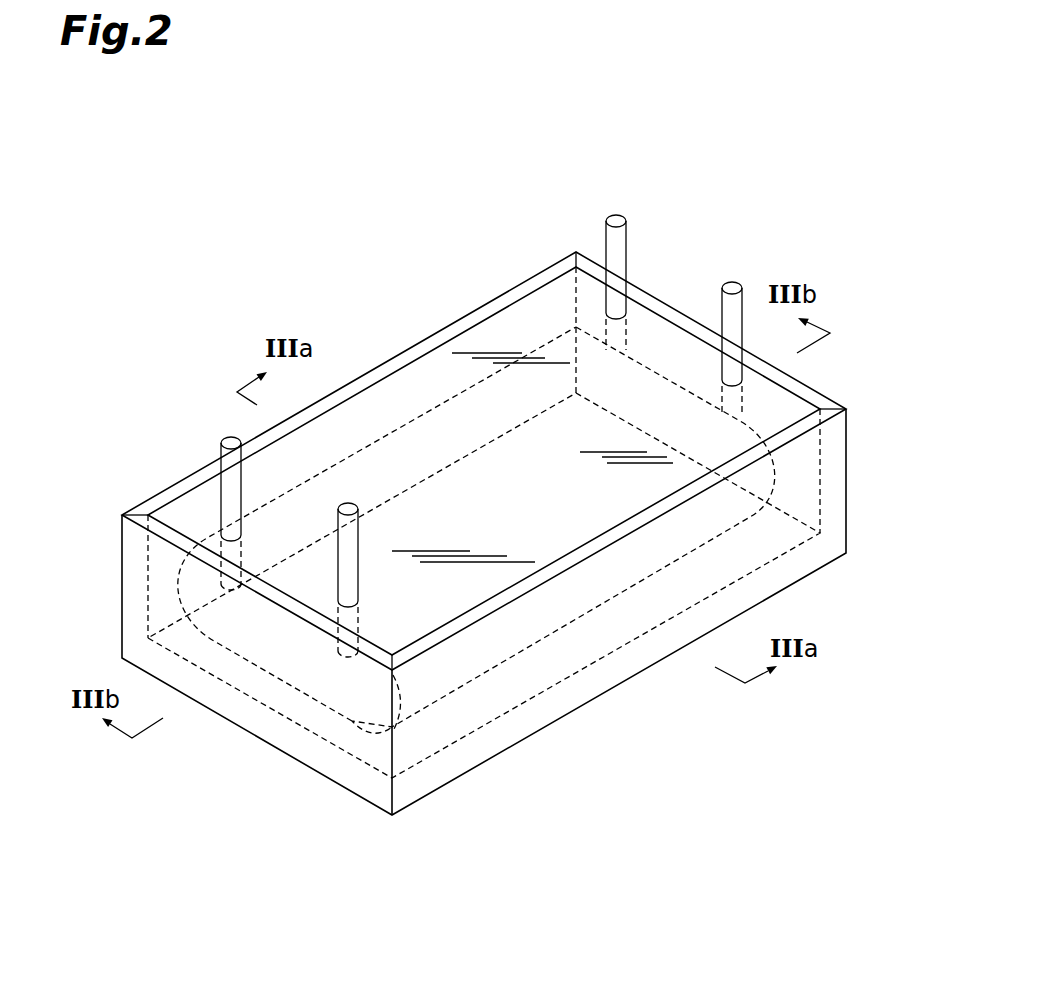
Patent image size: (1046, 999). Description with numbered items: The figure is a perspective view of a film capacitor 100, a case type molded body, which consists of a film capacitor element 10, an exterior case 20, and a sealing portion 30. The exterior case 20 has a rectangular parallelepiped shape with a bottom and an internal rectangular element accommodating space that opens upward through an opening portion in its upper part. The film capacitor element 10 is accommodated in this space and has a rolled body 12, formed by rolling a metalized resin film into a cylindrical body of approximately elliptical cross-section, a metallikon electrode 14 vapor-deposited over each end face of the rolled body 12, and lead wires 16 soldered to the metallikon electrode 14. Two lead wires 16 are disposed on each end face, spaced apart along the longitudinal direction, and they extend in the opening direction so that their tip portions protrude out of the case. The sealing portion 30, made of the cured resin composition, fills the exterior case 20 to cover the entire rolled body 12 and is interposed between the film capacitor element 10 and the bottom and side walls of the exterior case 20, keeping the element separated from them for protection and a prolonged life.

The film capacitor 100 is at (886, 195).
The film capacitor element 10 is at (442, 490).
The rolled body 12 is at (595, 598).
The metallikon electrode 14 is at (278, 665).
The lead wire 16 is at (525, 778).
The exterior case 20 is at (848, 470).
The sealing portion 30 is at (408, 392).